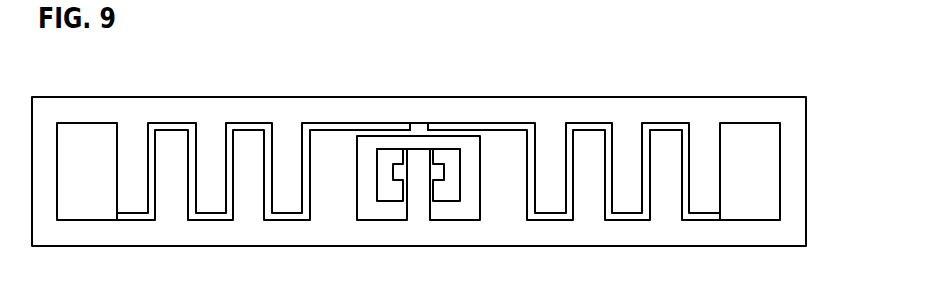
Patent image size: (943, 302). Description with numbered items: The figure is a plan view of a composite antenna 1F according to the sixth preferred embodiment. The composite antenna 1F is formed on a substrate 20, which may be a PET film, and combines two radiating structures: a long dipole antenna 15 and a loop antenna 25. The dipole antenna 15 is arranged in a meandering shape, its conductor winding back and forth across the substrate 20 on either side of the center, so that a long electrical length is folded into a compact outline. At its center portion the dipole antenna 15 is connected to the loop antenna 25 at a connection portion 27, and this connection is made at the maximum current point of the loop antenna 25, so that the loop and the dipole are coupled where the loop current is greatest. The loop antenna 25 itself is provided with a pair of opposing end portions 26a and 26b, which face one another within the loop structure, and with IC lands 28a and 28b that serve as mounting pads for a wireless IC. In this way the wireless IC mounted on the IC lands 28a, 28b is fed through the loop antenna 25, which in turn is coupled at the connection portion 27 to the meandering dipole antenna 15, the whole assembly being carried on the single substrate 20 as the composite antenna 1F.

The composite antenna 1F is at (177, 67).
The dipole antenna 15 is at (505, 123).
The substrate 20 is at (633, 97).
The loop antenna 25 is at (390, 219).
The end portion 26a is at (397, 212).
The end portion 26b is at (437, 210).
The connection portion 27 is at (418, 130).
The IC land 28a is at (398, 165).
The IC land 28b is at (437, 165).